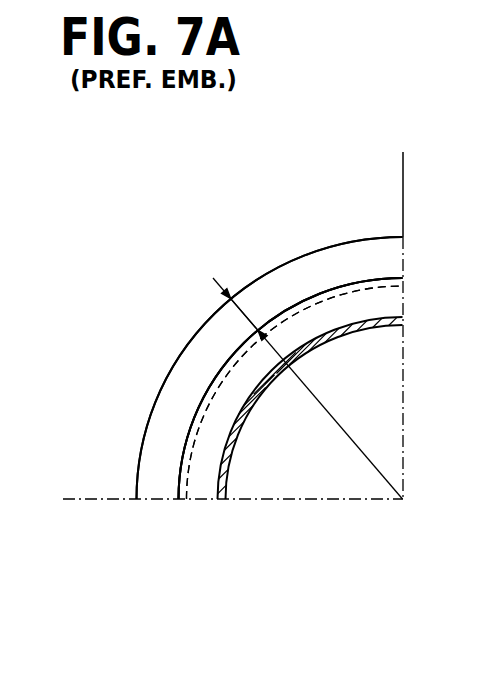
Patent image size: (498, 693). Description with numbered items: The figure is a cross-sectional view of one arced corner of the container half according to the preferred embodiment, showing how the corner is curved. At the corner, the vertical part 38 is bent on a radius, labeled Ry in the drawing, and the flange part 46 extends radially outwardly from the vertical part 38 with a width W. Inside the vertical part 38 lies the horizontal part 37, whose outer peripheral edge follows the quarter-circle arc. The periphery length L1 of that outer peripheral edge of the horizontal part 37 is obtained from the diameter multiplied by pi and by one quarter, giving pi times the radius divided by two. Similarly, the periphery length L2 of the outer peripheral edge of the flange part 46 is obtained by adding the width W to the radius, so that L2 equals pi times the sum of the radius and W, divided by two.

The horizontal part 37 is at (203, 478).
The vertical part 38 is at (217, 368).
The flange part 46 is at (170, 417).
The periphery length of the outer peripheral edge of the horizontal part L1 is at (392, 278).
The periphery length of the outer peripheral edge of the flange part L2 is at (392, 238).
The width of the flange part W is at (246, 317).
The radius Ry is at (308, 388).